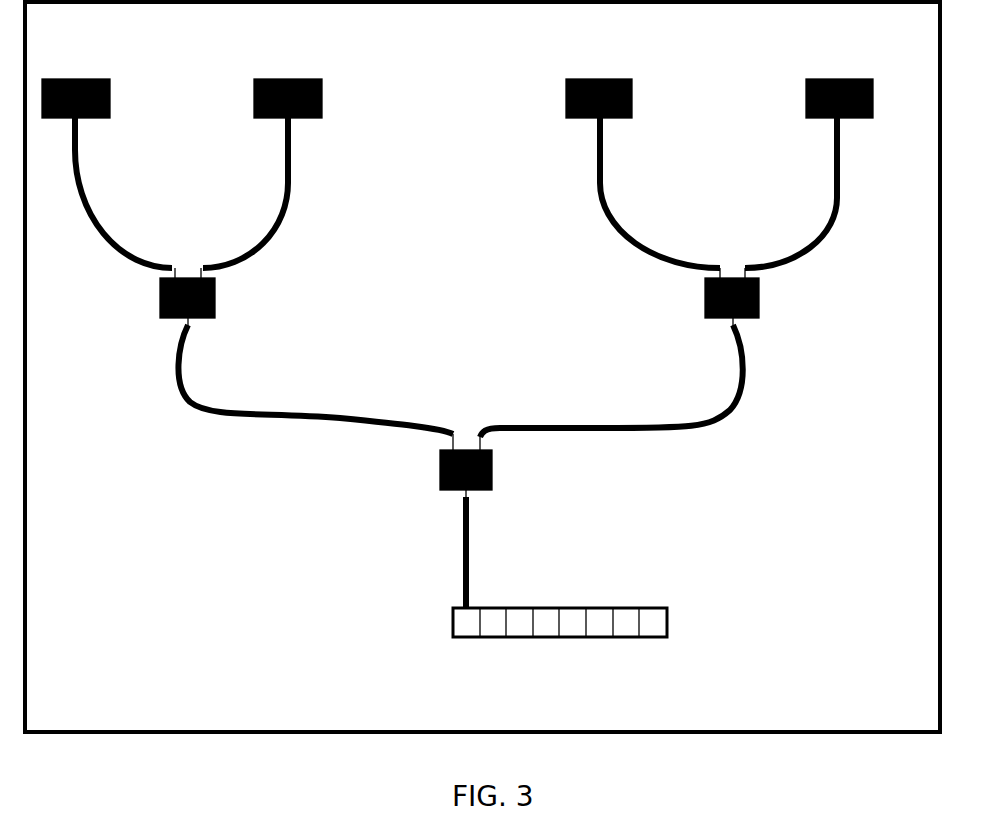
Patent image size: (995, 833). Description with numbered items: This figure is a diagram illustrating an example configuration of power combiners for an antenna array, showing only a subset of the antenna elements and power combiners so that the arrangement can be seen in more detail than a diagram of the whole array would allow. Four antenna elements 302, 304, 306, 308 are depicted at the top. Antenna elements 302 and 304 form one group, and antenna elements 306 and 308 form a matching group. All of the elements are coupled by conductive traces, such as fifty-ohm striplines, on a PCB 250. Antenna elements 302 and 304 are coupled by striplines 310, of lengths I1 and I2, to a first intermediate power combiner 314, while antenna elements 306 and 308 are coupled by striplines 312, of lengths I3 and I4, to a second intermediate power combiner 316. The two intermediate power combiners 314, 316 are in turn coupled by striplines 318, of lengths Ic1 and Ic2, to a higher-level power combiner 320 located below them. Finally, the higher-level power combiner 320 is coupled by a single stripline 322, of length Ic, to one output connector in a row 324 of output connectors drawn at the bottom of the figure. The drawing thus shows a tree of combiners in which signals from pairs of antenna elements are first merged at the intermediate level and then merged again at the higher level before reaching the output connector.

The PCB 250 is at (903, 712).
The antenna element 302 is at (95, 77).
The antenna element 304 is at (306, 77).
The antenna element 306 is at (620, 77).
The antenna element 308 is at (857, 77).
The striplines 310 is at (238, 225).
The striplines 312 is at (784, 233).
The first intermediate power combiner 314 is at (233, 300).
The second intermediate power combiner 316 is at (687, 300).
The striplines 318 is at (559, 408).
The higher-level power combiner 320 is at (495, 470).
The stripline 322 is at (468, 575).
The row of output connectors 324 is at (602, 608).